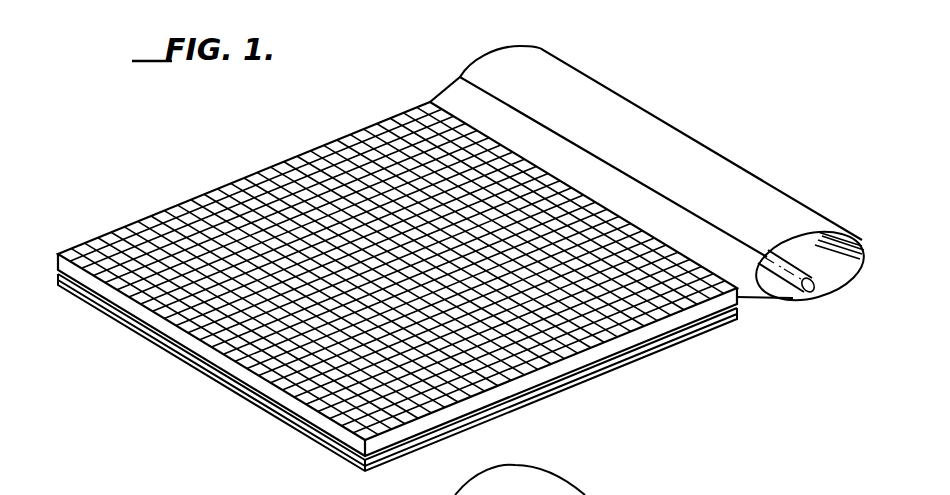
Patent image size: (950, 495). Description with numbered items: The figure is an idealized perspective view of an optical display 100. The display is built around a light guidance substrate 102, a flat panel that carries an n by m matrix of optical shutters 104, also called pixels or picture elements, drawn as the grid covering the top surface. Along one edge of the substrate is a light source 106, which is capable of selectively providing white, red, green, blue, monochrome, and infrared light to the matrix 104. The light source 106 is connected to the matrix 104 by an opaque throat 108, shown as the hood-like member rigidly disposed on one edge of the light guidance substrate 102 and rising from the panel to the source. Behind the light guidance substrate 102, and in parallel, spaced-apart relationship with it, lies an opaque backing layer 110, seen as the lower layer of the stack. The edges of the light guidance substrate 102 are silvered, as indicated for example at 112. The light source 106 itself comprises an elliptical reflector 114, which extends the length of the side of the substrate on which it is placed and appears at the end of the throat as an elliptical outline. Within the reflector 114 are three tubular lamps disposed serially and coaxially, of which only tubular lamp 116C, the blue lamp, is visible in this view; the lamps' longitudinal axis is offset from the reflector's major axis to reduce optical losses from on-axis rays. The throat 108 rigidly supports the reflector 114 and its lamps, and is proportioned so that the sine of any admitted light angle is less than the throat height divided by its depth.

The optical display 100 is at (371, 110).
The light guidance substrate 102 is at (57, 257).
The matrix of optical shutters 104 is at (138, 226).
The light source 106 is at (823, 301).
The opaque throat 108 is at (458, 82).
The opaque backing layer 110 is at (387, 462).
The silvered edge 112 is at (205, 362).
The elliptical reflector 114 is at (847, 277).
The tubular lamp 116C is at (799, 300).